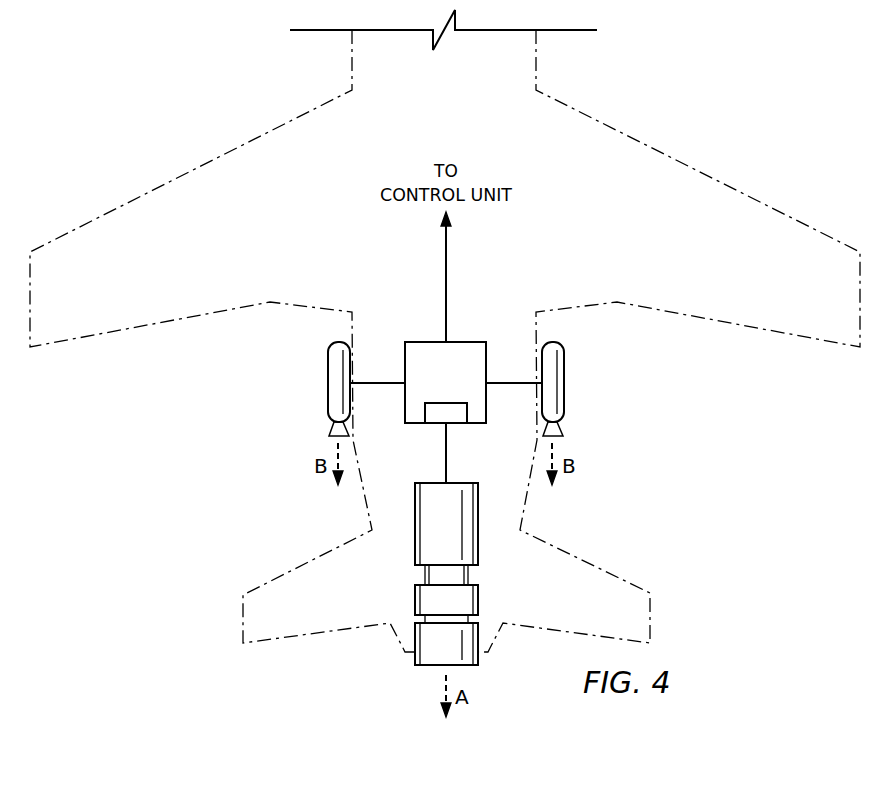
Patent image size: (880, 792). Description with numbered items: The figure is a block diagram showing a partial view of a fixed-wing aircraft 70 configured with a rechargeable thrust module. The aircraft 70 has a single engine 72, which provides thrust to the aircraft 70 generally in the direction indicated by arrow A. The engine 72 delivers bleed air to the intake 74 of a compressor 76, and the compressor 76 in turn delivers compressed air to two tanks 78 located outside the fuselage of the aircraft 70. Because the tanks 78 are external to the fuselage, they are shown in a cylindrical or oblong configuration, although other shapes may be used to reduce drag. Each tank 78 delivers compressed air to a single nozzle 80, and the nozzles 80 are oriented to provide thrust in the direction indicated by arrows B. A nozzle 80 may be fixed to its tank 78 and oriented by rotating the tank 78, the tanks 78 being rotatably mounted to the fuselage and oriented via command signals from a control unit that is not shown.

The aircraft 70 is at (712, 99).
The engine 72 is at (397, 577).
The intake 74 is at (445, 403).
The compressor 76 is at (466, 342).
The tank 78 is at (328, 372).
The nozzle 80 is at (329, 430).